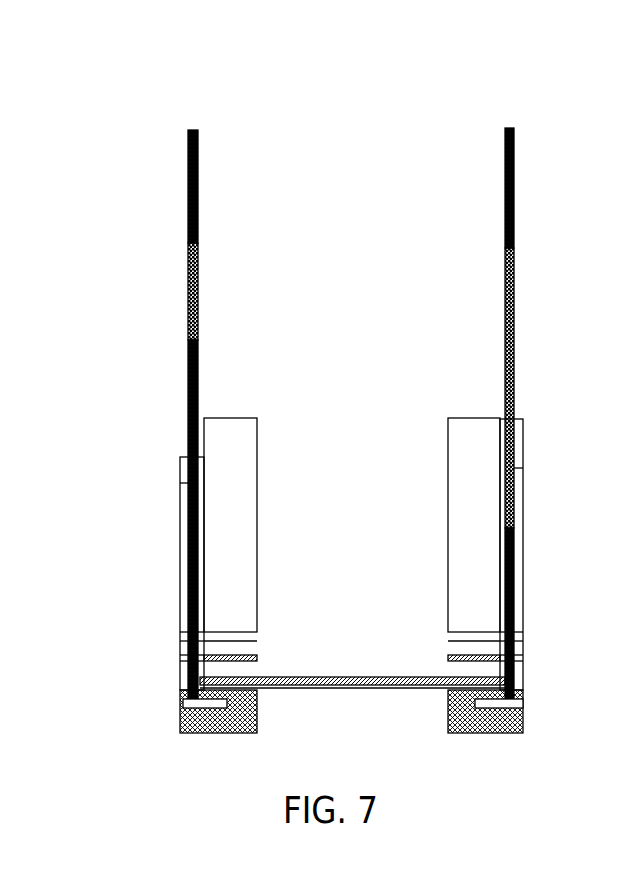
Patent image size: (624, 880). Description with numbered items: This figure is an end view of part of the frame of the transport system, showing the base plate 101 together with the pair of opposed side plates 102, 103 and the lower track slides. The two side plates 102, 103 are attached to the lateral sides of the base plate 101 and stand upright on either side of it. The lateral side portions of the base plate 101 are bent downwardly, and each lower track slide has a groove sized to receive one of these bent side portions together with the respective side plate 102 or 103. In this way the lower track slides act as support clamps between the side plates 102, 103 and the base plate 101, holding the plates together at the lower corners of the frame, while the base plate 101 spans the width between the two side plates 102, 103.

The base plate 101 is at (350, 677).
The side plate 102 is at (198, 187).
The side plate 103 is at (514, 188).